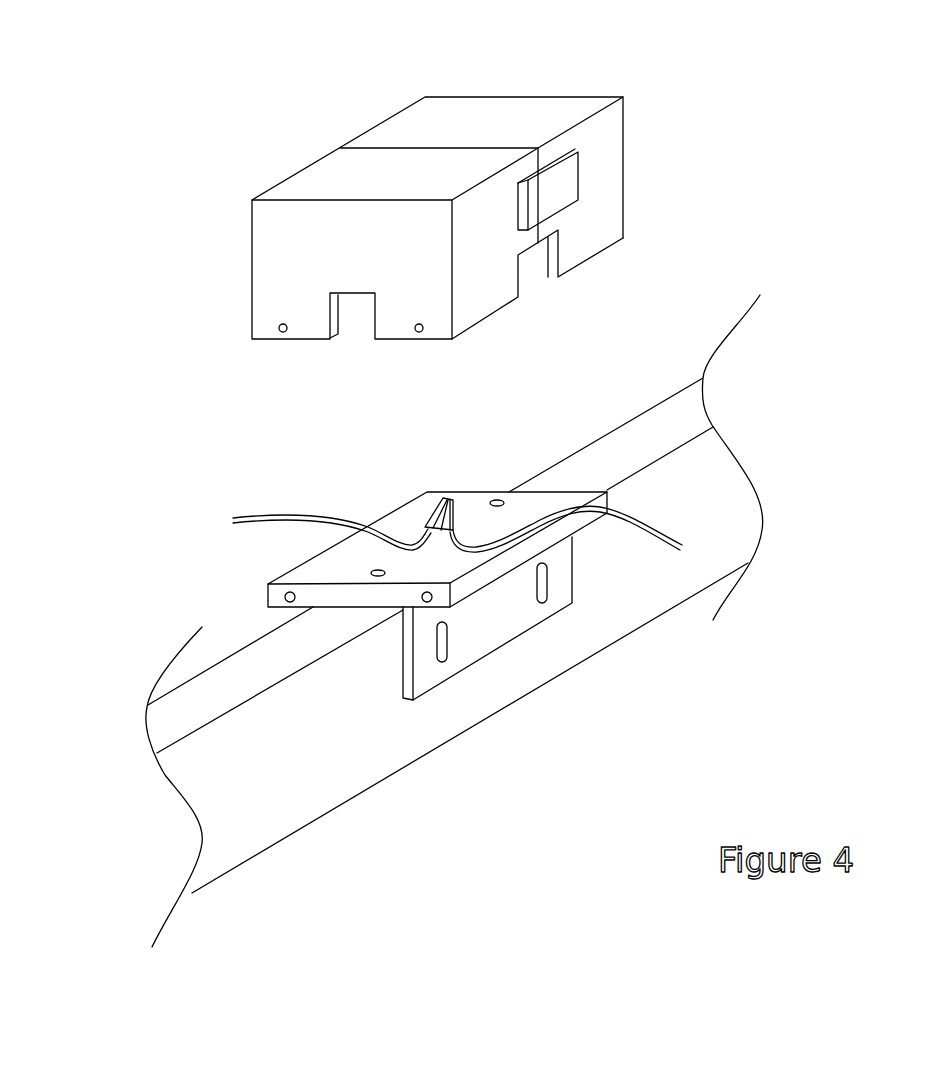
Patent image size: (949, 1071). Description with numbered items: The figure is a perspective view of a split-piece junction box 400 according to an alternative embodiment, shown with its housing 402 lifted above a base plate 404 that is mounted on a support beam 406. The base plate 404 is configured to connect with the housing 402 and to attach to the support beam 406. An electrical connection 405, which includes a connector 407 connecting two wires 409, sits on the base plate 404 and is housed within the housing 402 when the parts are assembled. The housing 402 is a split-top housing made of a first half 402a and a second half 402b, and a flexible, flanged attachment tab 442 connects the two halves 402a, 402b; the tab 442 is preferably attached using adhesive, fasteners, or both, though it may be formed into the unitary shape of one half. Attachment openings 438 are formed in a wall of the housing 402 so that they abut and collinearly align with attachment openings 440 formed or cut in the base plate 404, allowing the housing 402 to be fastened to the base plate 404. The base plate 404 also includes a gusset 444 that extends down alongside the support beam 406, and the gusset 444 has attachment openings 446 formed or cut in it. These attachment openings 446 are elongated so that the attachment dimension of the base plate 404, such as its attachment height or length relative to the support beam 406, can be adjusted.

The junction box 400 is at (797, 133).
The housing 402 is at (655, 157).
The first half 402a is at (443, 117).
The second half 402b is at (312, 183).
The attachment openings 438 is at (280, 331).
The attachment tab 442 is at (557, 200).
The base plate 404 is at (233, 568).
The electrical connection 405 is at (407, 472).
The support beam 406 is at (675, 588).
The connector 407 is at (450, 500).
The wires 409 is at (278, 513).
The attachment openings 440 is at (290, 602).
The gusset 444 is at (493, 640).
The attachment openings 446 is at (543, 595).